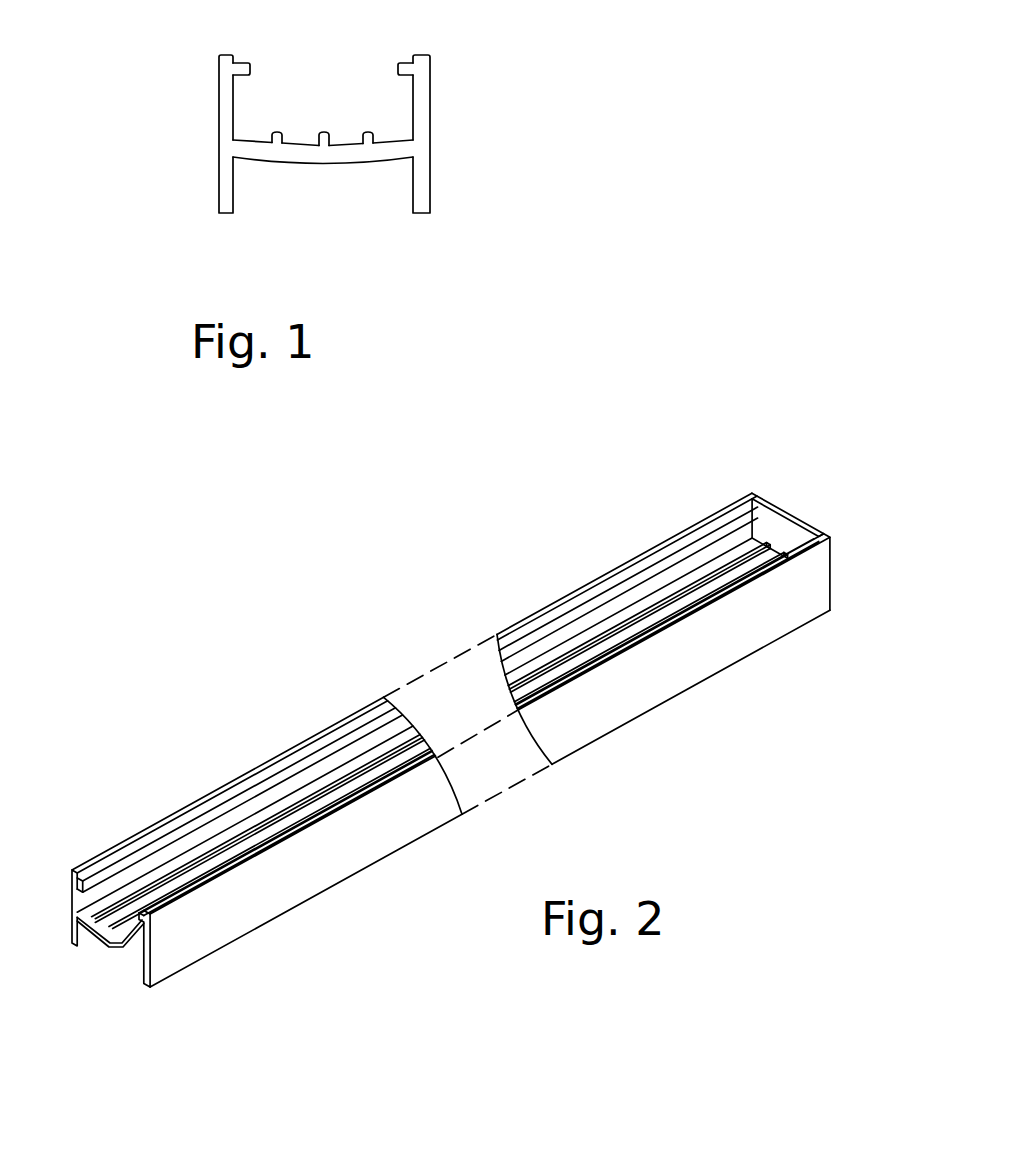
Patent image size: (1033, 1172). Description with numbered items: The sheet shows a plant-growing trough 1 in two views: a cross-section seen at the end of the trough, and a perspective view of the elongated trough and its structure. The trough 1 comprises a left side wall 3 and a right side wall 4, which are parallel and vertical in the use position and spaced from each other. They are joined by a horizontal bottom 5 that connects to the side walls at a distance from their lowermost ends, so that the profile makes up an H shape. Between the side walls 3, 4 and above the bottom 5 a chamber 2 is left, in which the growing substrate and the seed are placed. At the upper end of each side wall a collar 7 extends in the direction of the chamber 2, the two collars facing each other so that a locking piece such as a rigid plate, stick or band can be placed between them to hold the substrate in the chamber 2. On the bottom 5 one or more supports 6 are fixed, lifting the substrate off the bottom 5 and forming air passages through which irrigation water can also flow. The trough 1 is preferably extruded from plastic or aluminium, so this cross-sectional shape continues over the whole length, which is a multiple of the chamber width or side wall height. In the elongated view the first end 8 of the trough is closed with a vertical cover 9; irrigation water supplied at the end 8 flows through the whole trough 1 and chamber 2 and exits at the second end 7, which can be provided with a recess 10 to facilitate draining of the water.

In FIG. 1, the trough 1 is at (337, 123).
In FIG. 2, the trough 1 is at (442, 697).
In FIG. 1, the chamber 2 is at (335, 85).
In FIG. 1, the left side wall 3 is at (223, 122).
In FIG. 1, the right side wall 4 is at (422, 118).
In FIG. 1, the bottom 5 is at (347, 155).
In FIG. 1, the support 6 is at (322, 142).
In FIG. 1, the collar 7 is at (242, 63).
In FIG. 2, the collar 7 is at (83, 850).
In FIG. 2, the first end 8 is at (790, 496).
In FIG. 2, the cover 9 is at (775, 527).
In FIG. 2, the recess 10 is at (110, 957).